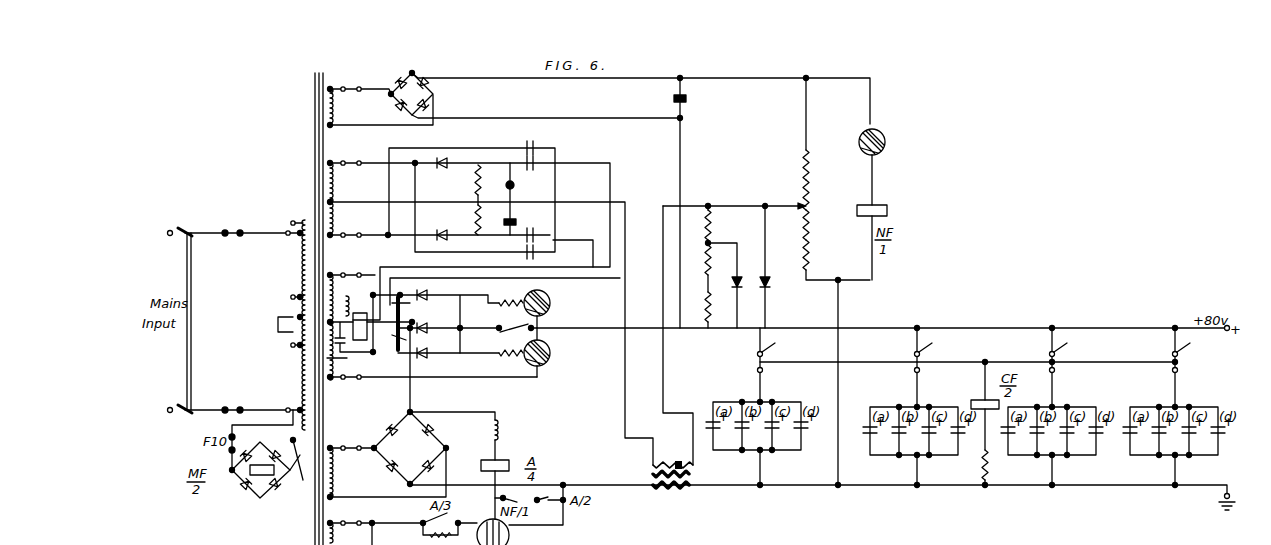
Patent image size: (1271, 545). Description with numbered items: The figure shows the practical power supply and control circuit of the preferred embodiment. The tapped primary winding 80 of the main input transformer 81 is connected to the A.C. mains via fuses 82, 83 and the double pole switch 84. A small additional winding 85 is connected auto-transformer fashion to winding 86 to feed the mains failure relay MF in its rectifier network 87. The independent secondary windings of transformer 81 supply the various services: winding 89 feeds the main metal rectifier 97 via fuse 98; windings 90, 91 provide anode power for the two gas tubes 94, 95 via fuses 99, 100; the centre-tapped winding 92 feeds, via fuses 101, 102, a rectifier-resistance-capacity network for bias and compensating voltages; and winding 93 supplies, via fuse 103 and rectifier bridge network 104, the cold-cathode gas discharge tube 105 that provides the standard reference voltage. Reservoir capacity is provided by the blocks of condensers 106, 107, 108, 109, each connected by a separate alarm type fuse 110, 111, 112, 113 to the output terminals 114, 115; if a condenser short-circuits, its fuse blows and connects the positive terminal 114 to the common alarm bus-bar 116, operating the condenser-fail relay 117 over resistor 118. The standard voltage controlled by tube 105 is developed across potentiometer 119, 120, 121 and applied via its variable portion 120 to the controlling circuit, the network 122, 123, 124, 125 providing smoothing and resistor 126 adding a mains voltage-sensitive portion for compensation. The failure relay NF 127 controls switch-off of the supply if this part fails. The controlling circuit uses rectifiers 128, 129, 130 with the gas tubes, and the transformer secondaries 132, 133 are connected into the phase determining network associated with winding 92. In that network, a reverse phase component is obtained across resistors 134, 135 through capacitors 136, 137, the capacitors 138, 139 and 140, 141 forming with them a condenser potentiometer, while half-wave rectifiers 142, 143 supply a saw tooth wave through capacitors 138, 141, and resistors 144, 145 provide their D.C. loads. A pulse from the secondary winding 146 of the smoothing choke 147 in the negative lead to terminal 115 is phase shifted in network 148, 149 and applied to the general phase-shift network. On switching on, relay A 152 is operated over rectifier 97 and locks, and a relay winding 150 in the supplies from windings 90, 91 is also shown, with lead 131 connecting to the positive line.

The tapped primary winding 80 is at (298, 368).
The main input transformer 81 is at (324, 299).
The fuse 82 is at (236, 224).
The fuse 83 is at (236, 401).
The double pole switch 84 is at (202, 321).
The additional winding 85 is at (302, 468).
The mains failure relay winding 86 is at (246, 472).
The rectifier network 87 is at (260, 475).
The secondary winding 89 is at (387, 474).
The secondary winding 90 is at (346, 359).
The secondary winding 91 is at (348, 298).
The centre-tapped secondary winding 92 is at (491, 323).
The secondary winding 93 is at (381, 111).
The gas tube 94 is at (536, 352).
The gas tube 95 is at (536, 309).
The main metal rectifier 97 is at (418, 457).
The fuse 98 is at (352, 463).
The fuse 99 is at (433, 385).
The fuse 100 is at (352, 317).
The fuse 101 is at (439, 227).
The fuse 102 is at (469, 232).
The fuse 103 is at (360, 96).
The rectifier bridge network 104 is at (420, 83).
The cold-cathode gas discharge tube 105 is at (888, 150).
The block of condensers 106 is at (763, 444).
The block of condensers 107 is at (920, 446).
The block of condensers 108 is at (1085, 462).
The block of condensers 109 is at (1180, 446).
The alarm type fuse 110 is at (780, 365).
The alarm type fuse 111 is at (937, 367).
The alarm type fuse 112 is at (1071, 367).
The alarm type fuse 113 is at (1190, 367).
The output terminal 114 is at (1234, 350).
The output terminal 115 is at (1205, 492).
The common alarm bus-bar 116 is at (898, 361).
The condenser-fail relay 117 is at (1007, 406).
The resistor 118 is at (1001, 467).
The potentiometer section 119 is at (820, 129).
The variable portion of potentiometer 120 is at (750, 210).
The potentiometer section 121 is at (836, 260).
The smoothing resistor 122 is at (711, 228).
The smoothing resistor 123 is at (708, 262).
The smoothing network element 124 is at (741, 282).
The smoothing network element 125 is at (766, 287).
The resistor 126 is at (708, 312).
The failure relay 127 is at (884, 204).
The rectifier 128 is at (424, 362).
The rectifier 129 is at (435, 334).
The rectifier 130 is at (436, 321).
The connection line 131 is at (396, 406).
The transformer secondary 132 is at (400, 368).
The transformer secondary 133 is at (365, 313).
The resistor 134 is at (586, 183).
The resistor 135 is at (586, 224).
The capacitor 136 is at (532, 141).
The capacitor 137 is at (554, 253).
The capacitor 138 is at (540, 168).
The capacitor 139 is at (529, 199).
The capacitor 140 is at (528, 212).
The capacitor 141 is at (541, 231).
The half-wave rectifier 142 is at (447, 161).
The half-wave rectifier 143 is at (456, 240).
The resistor 144 is at (475, 191).
The resistor 145 is at (475, 223).
The secondary winding of smoothing choke 146 is at (690, 474).
The smoothing choke 147 is at (681, 489).
The phase shift network element 148 is at (661, 456).
The phase shift network element 149 is at (681, 460).
The relay 150 is at (473, 465).
The relay 152 is at (366, 272).